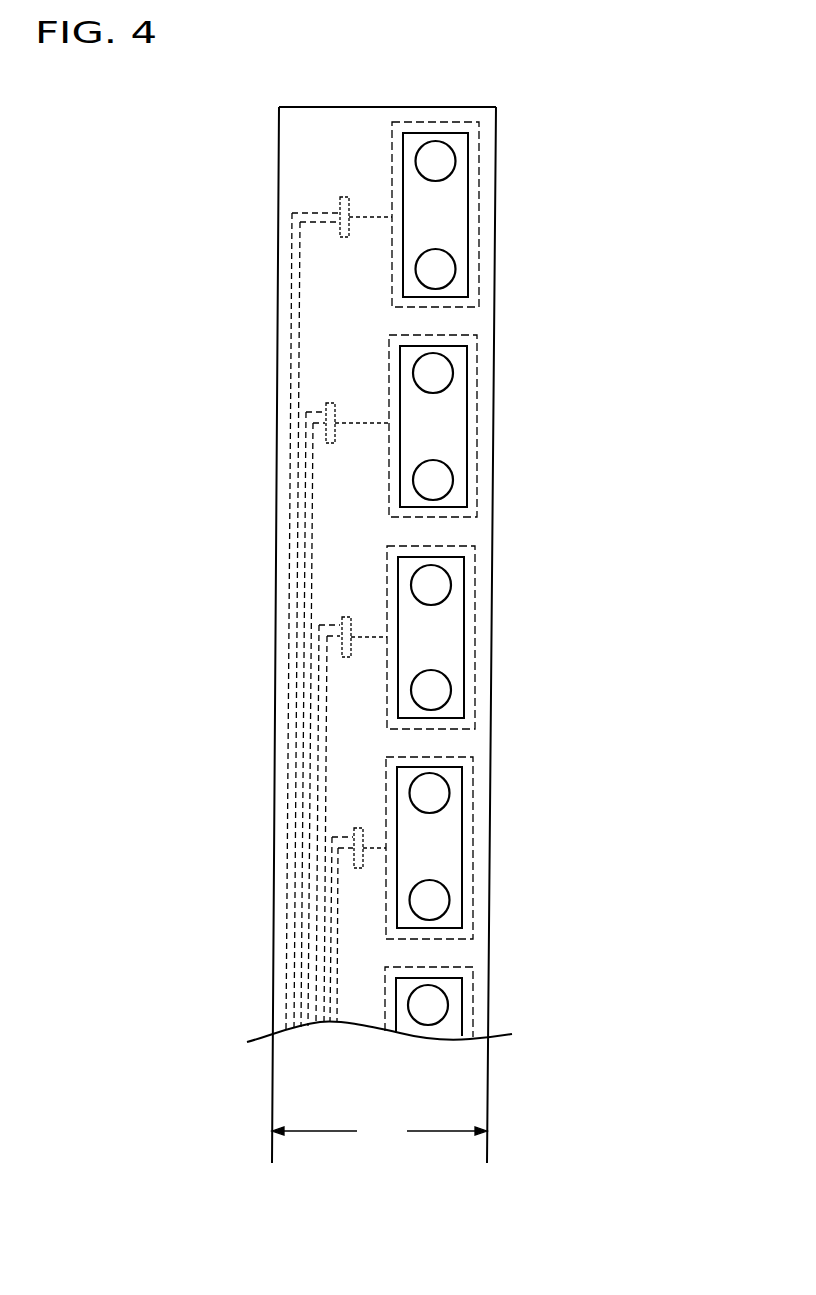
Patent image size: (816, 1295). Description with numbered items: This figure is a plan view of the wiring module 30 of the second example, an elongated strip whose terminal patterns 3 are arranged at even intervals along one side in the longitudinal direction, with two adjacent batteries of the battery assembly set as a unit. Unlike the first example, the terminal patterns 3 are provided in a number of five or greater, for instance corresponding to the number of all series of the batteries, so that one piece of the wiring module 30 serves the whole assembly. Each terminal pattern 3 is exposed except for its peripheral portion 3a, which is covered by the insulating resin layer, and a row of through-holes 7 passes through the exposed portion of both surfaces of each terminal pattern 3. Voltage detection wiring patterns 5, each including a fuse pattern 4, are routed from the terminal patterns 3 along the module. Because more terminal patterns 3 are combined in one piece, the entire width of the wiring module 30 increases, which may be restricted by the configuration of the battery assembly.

The wiring module 30 is at (590, 413).
The terminal pattern 3 is at (460, 216).
The peripheral portion 3a is at (473, 242).
The fuse pattern 4 is at (340, 203).
The voltage detection wiring pattern 5 is at (290, 322).
The through-hole 7 is at (455, 161).